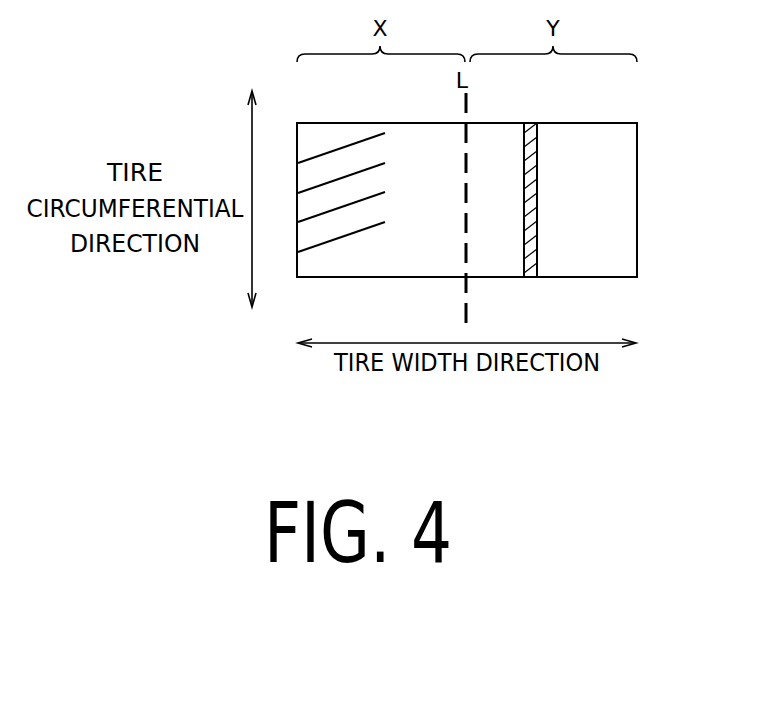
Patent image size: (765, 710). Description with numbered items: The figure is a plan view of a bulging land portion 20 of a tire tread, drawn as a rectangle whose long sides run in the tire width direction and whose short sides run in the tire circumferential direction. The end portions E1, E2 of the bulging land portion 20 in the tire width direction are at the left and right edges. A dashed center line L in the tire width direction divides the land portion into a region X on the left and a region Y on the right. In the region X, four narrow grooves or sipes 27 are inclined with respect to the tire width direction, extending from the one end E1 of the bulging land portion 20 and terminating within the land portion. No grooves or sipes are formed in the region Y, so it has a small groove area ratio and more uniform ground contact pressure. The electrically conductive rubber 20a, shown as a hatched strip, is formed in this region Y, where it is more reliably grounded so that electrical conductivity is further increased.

The bulging land portion 20 is at (411, 195).
The electrically conductive rubber 20a is at (537, 197).
The narrow grooves (or sipes) 27 is at (355, 236).
The end portion E1 is at (299, 280).
The end portion E2 is at (638, 280).